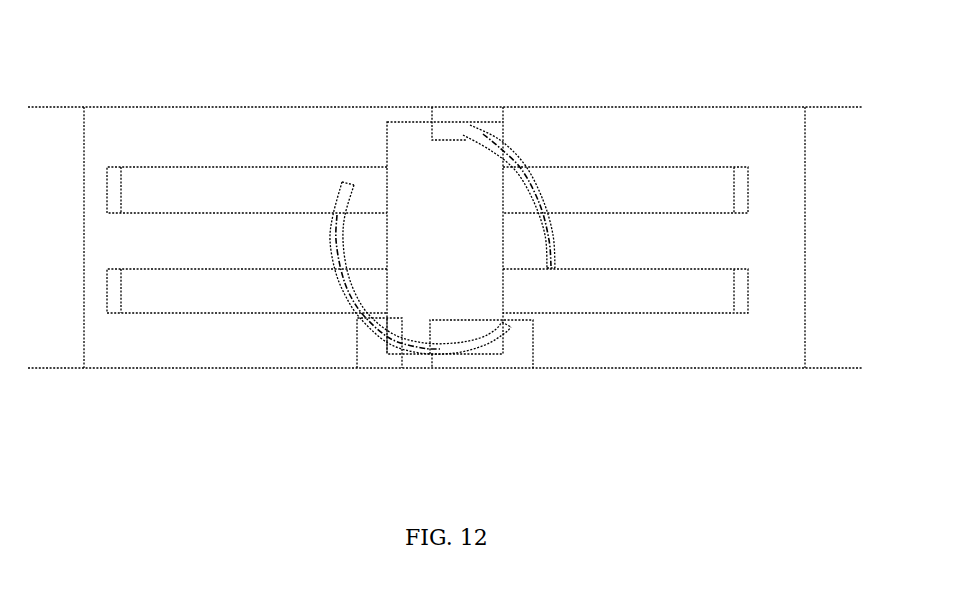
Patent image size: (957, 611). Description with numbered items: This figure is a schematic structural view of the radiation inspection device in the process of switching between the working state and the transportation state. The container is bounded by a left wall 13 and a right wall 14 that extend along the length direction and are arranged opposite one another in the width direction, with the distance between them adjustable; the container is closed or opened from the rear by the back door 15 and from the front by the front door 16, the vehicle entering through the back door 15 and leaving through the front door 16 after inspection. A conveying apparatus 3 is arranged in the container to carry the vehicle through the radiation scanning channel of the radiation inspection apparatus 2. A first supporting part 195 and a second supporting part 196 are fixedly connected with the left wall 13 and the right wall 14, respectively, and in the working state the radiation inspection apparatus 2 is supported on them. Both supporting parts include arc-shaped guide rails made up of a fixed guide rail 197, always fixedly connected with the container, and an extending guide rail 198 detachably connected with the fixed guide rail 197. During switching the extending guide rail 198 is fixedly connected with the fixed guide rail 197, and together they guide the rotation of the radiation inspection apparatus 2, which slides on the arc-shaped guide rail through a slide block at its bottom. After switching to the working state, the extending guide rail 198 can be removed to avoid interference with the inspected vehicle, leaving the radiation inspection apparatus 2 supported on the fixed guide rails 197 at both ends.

The radiation inspection apparatus 2 is at (410, 150).
The conveying apparatus 3 is at (243, 186).
The left wall 13 is at (305, 371).
The right wall 14 is at (315, 107).
The back door 15 is at (837, 107).
The front door 16 is at (58, 106).
The first supporting part 195 is at (520, 357).
The second supporting part 196 is at (482, 122).
The fixed guide rail 197 is at (518, 145).
The extending guide rail 198 is at (540, 168).